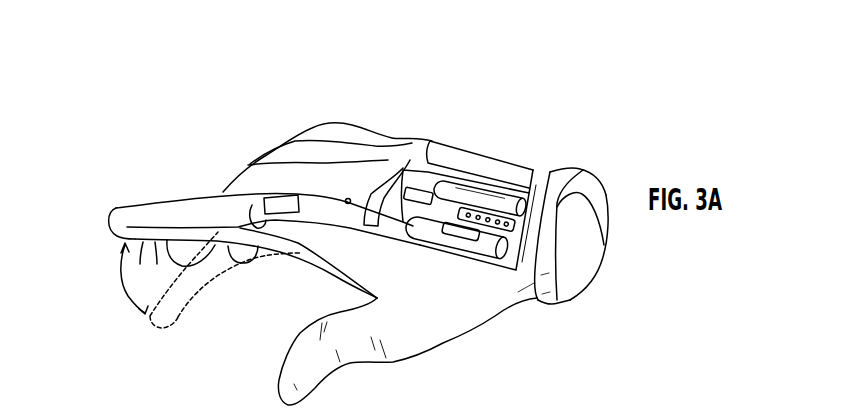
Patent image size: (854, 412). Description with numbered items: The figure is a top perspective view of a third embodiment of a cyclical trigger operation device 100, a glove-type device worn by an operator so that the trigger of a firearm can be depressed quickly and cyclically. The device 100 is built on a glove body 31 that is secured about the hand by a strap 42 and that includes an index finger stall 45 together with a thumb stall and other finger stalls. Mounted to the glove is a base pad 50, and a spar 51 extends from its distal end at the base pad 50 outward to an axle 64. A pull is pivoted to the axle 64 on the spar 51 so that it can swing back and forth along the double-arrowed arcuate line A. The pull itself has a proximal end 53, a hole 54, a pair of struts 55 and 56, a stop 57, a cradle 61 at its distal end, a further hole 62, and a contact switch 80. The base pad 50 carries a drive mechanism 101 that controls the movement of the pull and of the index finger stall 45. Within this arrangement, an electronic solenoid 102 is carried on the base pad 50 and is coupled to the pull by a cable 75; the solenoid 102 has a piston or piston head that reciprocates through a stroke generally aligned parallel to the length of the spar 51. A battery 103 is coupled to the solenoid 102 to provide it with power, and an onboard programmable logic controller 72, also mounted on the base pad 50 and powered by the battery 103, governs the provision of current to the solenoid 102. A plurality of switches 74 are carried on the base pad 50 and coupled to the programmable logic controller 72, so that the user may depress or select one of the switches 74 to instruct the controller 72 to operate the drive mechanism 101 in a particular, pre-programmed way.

The cyclical trigger operation device 100 is at (198, 57).
The index finger stall 45 is at (158, 202).
The strut 55 is at (253, 198).
The stop 57 is at (288, 203).
The proximal end 53 is at (337, 197).
The programmable logic controller 72 is at (401, 180).
The base pad 50 is at (432, 141).
The glove body 31 is at (478, 153).
The battery 103 is at (492, 186).
The drive mechanism 101 is at (539, 194).
The hole 54 is at (353, 192).
The cable 75 is at (371, 208).
The spar 51 is at (333, 222).
The axle 64 is at (267, 213).
The strut 56 is at (223, 230).
The contact switch 80 is at (183, 250).
The cradle 61 is at (125, 245).
The hole 62 is at (140, 242).
The double-arrowed arcuate line A is at (134, 292).
The electronic solenoid 102 is at (444, 250).
The switches 74 is at (514, 247).
The strap 42 is at (557, 300).